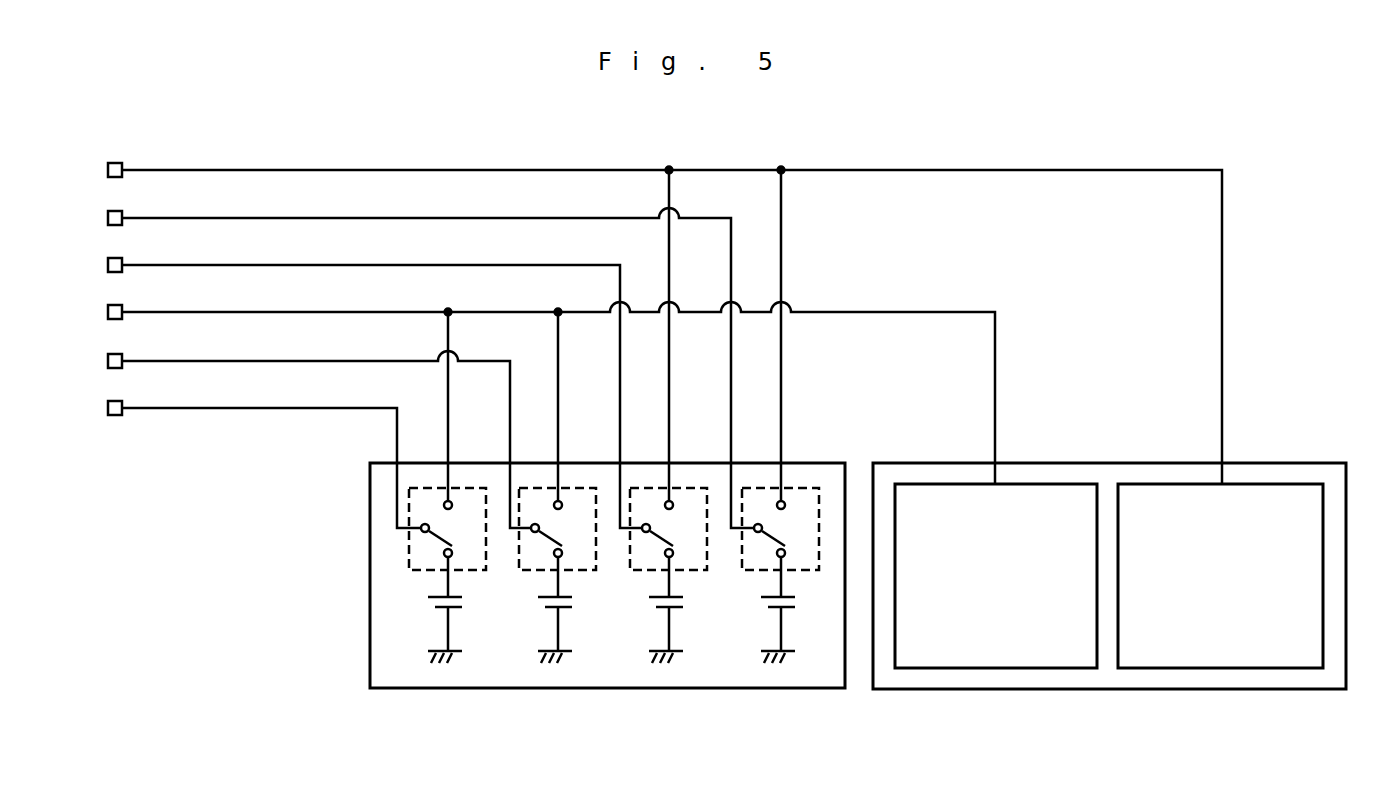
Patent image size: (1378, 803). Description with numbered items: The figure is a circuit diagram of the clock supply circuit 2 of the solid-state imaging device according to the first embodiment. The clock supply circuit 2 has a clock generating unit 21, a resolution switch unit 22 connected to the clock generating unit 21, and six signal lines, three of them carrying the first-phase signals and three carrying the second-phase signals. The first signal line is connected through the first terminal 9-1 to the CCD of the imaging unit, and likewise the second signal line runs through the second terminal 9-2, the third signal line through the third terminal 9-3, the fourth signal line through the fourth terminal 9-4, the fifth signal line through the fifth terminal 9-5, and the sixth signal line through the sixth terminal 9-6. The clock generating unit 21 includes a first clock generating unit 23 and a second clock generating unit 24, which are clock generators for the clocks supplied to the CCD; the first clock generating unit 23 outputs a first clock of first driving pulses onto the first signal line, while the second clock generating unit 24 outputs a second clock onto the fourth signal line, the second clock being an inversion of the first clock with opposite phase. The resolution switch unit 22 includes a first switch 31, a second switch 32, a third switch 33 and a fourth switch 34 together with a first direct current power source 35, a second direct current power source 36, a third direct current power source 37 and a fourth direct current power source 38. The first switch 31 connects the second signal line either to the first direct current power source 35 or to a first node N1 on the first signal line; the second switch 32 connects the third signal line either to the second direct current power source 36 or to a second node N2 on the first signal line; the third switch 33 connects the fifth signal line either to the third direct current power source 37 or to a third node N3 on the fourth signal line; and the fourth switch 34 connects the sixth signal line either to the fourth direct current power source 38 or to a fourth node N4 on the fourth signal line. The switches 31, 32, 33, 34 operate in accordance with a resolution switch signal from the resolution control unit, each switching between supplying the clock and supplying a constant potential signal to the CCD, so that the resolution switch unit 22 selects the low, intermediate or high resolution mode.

The clock supply circuit 2 is at (1057, 149).
The first terminal 9-1 is at (108, 170).
The second terminal 9-2 is at (108, 218).
The third terminal 9-3 is at (108, 265).
The fourth terminal 9-4 is at (108, 312).
The fifth terminal 9-5 is at (108, 361).
The sixth terminal 9-6 is at (108, 408).
The first node N1 is at (781, 167).
The second node N2 is at (669, 167).
The third node N3 is at (560, 314).
The fourth node N4 is at (450, 311).
The clock generating unit 21 is at (1098, 689).
The resolution switch unit 22 is at (370, 570).
The first clock generating unit 23 is at (1221, 668).
The second clock generating unit 24 is at (995, 668).
The first switch 31 is at (806, 572).
The second switch 32 is at (694, 572).
The third switch 33 is at (583, 572).
The fourth switch 34 is at (473, 572).
The first direct current power source 35 is at (770, 605).
The second direct current power source 36 is at (658, 605).
The third direct current power source 37 is at (547, 605).
The fourth direct current power source 38 is at (437, 605).